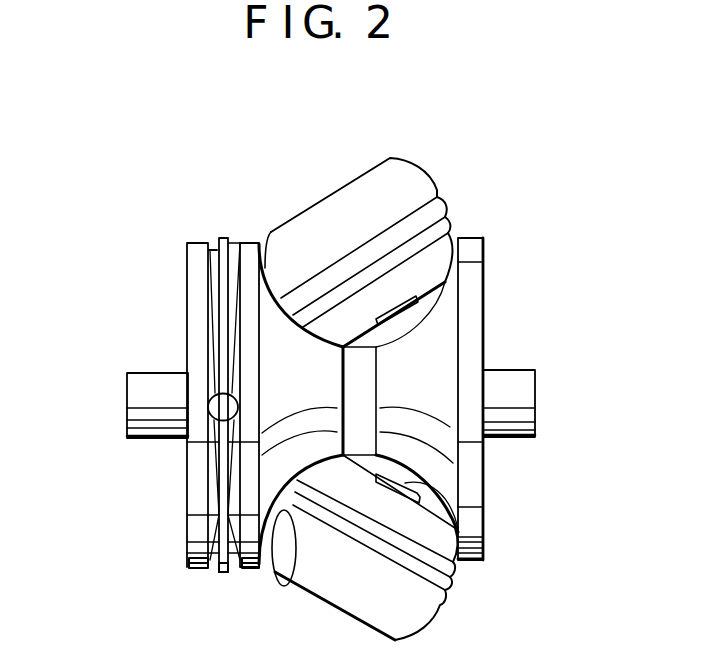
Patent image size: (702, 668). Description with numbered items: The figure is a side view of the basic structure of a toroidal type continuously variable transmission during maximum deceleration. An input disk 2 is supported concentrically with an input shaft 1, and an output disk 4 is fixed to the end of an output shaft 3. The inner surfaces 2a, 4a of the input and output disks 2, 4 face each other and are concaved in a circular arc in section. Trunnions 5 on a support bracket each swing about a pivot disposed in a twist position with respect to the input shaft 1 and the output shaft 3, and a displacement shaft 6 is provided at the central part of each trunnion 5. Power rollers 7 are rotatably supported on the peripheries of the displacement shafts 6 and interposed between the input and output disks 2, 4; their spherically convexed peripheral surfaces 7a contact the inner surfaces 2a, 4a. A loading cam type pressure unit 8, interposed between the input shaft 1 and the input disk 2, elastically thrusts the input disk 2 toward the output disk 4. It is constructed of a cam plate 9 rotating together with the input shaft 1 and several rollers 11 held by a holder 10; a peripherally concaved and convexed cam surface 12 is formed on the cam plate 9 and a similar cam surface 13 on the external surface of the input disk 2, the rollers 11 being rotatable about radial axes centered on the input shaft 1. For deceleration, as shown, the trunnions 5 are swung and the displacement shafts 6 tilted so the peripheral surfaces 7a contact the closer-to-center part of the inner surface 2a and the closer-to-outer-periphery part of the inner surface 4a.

The input shaft 1 is at (130, 402).
The input disk 2 is at (257, 242).
The inner surface of the input disk 2a is at (286, 468).
The output shaft 3 is at (530, 384).
The output disk 4 is at (474, 256).
The inner surface of the output disk 4a is at (410, 328).
The trunnion 5 is at (420, 186).
The displacement shaft 6 is at (427, 318).
The power roller 7 is at (458, 262).
The peripheral surface of the power roller 7a is at (456, 234).
The loading cam type pressure unit 8 is at (192, 243).
The cam plate 9 is at (193, 553).
The holder 10 is at (222, 567).
The roller 11 is at (231, 240).
The cam surface 12 is at (209, 360).
The cam surface 13 is at (237, 340).